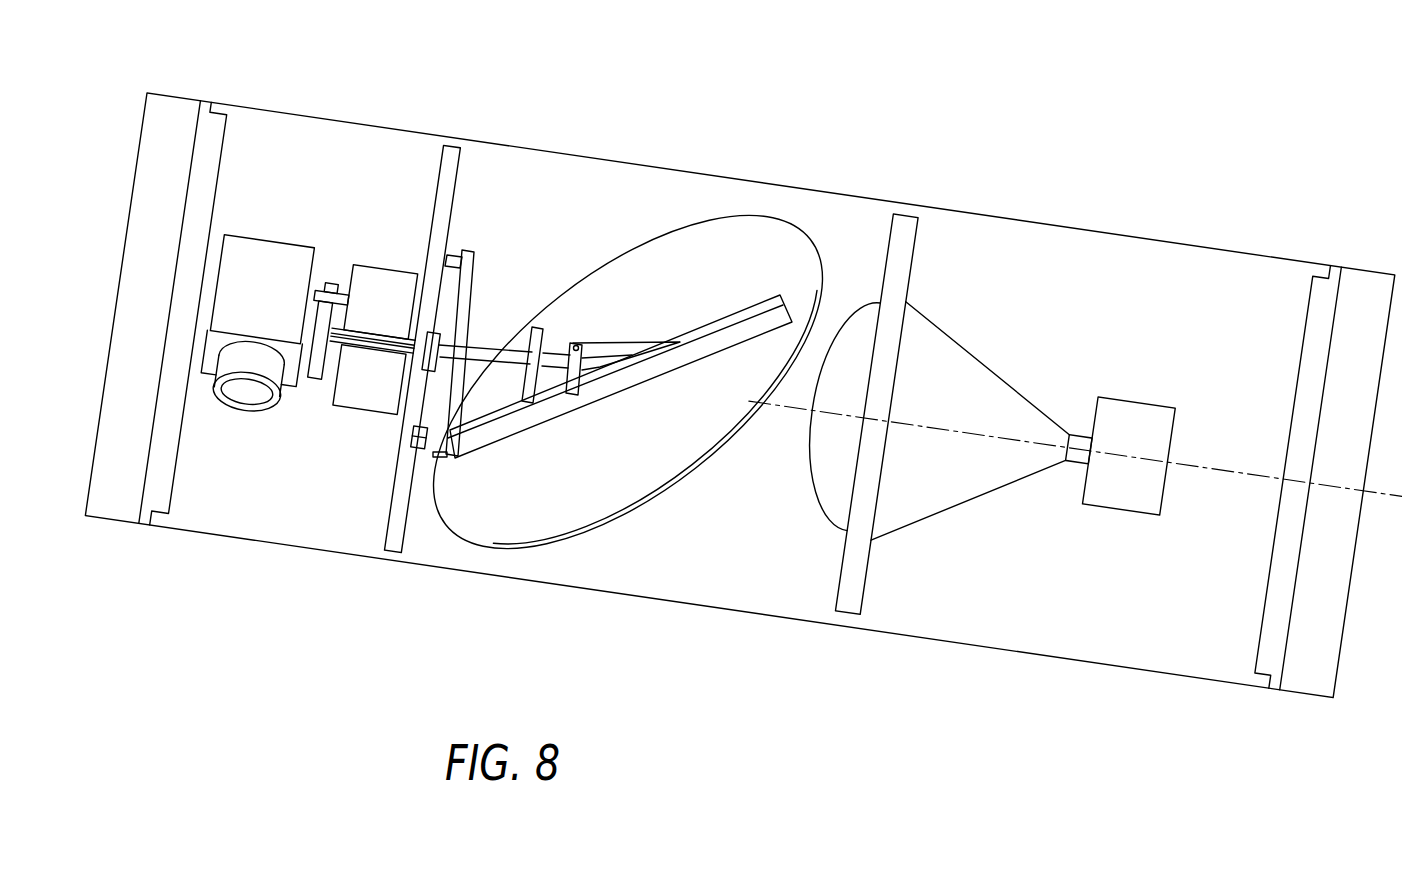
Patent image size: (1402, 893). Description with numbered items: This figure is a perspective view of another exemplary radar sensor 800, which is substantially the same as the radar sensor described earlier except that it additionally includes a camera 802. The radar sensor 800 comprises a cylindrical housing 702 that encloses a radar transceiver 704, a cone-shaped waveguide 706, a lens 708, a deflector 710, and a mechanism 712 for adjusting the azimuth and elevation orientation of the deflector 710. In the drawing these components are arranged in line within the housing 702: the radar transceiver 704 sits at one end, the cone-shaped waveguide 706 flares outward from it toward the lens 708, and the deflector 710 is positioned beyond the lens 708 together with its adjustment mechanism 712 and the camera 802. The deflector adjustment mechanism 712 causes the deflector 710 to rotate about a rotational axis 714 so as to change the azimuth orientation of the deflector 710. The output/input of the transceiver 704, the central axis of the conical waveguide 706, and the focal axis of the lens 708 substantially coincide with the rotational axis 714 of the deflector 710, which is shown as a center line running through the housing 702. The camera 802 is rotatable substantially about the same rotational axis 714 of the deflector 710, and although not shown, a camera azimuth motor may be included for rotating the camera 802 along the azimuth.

The radar sensor 800 is at (1052, 188).
The cylindrical housing 702 is at (920, 633).
The radar transceiver 704 is at (1155, 444).
The cone-shaped waveguide 706 is at (962, 493).
The lens 708 is at (869, 366).
The deflector 710 is at (722, 273).
The deflector adjustment mechanism 712 is at (308, 411).
The rotational axis 714 is at (1227, 471).
The camera 802 is at (270, 253).